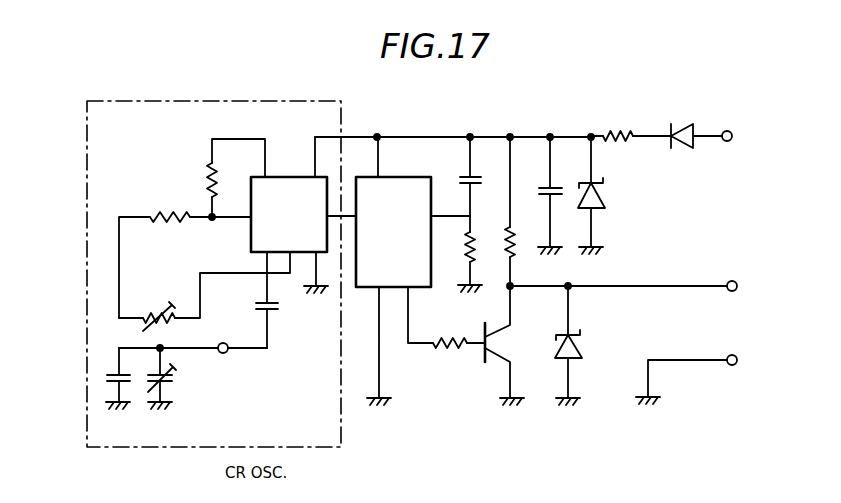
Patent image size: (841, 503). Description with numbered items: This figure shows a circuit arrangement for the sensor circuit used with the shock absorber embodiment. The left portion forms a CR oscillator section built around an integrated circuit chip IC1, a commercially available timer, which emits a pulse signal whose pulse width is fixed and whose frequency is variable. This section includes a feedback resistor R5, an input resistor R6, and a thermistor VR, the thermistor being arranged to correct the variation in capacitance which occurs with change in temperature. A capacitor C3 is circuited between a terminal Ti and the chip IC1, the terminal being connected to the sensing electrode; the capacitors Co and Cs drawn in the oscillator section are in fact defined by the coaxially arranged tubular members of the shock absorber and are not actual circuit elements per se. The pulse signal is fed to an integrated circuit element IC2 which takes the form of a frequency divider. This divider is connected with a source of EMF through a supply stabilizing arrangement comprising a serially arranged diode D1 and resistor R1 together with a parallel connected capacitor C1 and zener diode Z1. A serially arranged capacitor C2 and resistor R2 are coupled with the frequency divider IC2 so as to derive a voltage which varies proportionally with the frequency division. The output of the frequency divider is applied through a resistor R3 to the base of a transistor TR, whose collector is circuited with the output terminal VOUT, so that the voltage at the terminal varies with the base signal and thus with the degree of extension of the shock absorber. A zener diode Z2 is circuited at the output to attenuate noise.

The feedback resistor R5 is at (208, 174).
The input resistor R6 is at (176, 212).
The integrated circuit chip IC1 is at (303, 215).
The thermistor VR is at (154, 311).
The capacitor C3 is at (272, 311).
The terminal Ti is at (226, 353).
The capacitor Co is at (112, 372).
The capacitor Cs is at (175, 380).
The integrated circuit element IC2 is at (413, 271).
The capacitor C2 is at (465, 177).
The resistor R2 is at (465, 247).
The capacitor C1 is at (546, 189).
The zener diode Z1 is at (607, 203).
The resistor R1 is at (617, 129).
The diode D1 is at (688, 122).
The transistor TR is at (484, 331).
The resistor R3 is at (441, 352).
The Vout terminal VOUT is at (624, 263).
The zener diode Z2 is at (586, 350).